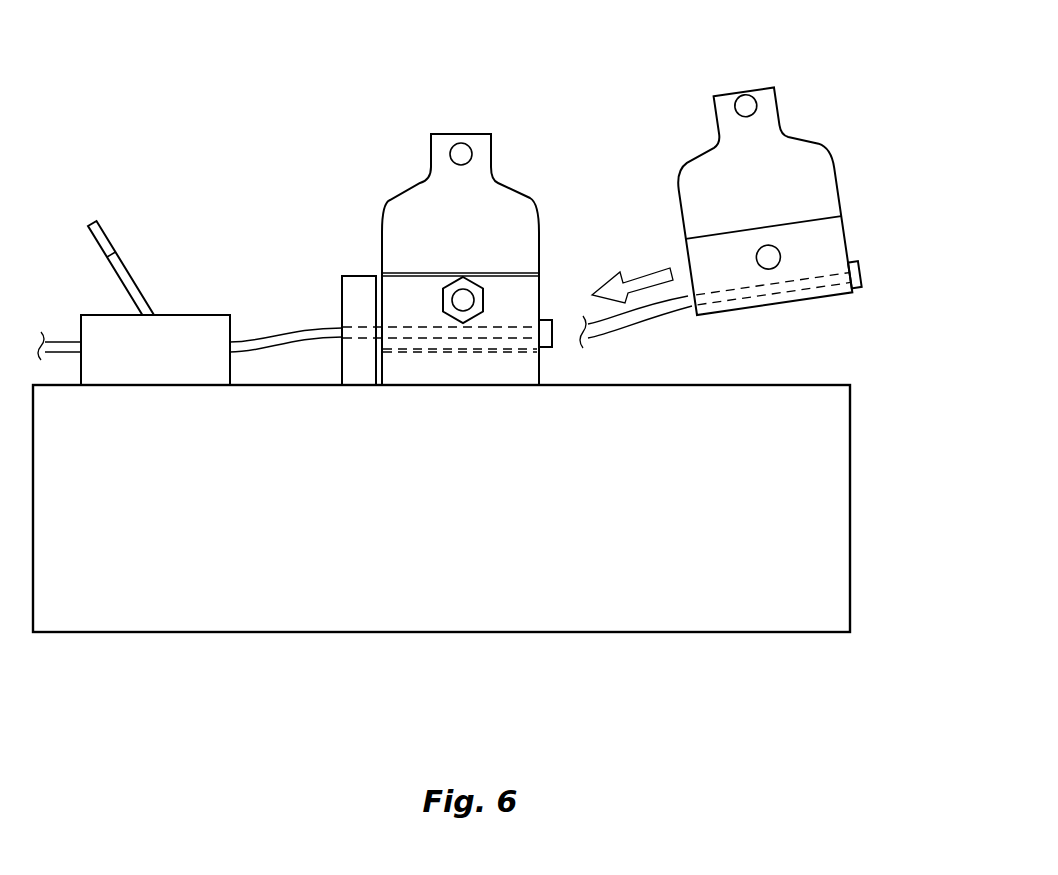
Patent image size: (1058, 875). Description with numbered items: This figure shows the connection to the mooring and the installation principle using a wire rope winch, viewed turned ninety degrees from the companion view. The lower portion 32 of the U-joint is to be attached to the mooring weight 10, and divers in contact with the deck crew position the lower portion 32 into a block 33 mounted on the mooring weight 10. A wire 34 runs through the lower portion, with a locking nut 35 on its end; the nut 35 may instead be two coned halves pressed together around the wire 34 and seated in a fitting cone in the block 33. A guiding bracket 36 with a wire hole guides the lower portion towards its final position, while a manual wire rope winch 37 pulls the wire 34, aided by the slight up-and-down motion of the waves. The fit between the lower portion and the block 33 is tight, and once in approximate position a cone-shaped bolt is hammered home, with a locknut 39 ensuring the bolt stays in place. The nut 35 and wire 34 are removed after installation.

The mooring weight 10 is at (828, 477).
The lower portion of the U-joint 32 is at (497, 203).
The block 33 is at (408, 295).
The wire 34 is at (280, 337).
The locking nut 35 is at (857, 265).
The guiding bracket 36 is at (352, 303).
The manual wire rope winch 37 is at (112, 338).
The locknut 39 is at (460, 300).